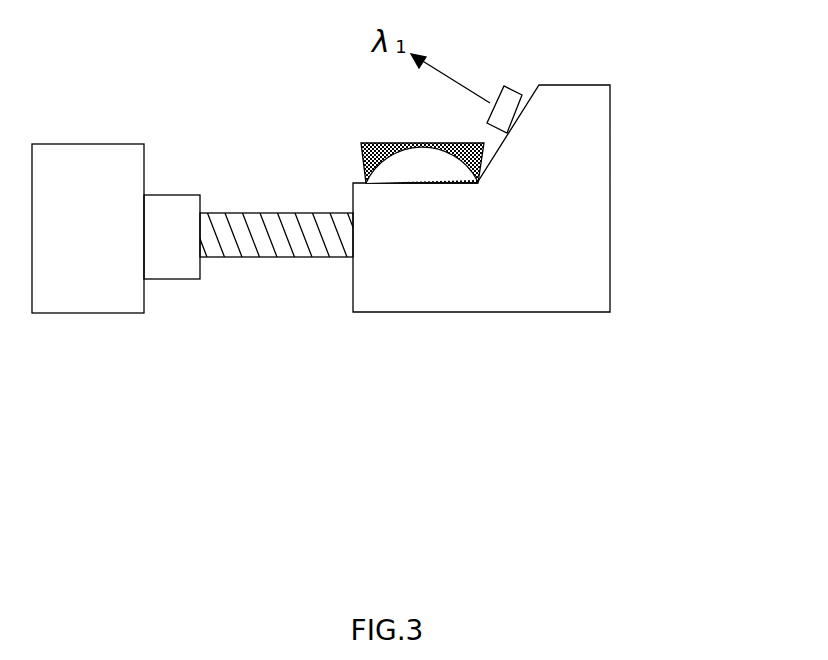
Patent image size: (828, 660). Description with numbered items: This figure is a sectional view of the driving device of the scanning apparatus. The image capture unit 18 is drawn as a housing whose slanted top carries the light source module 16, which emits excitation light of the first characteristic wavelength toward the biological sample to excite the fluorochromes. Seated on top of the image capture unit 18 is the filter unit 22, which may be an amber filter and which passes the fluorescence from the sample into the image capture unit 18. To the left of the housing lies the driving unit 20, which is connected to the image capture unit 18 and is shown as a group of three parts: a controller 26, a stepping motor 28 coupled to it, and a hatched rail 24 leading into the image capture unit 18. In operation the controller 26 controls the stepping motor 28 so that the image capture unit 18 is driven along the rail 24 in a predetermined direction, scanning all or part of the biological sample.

The light source module 16 is at (512, 110).
The image capture unit 18 is at (427, 170).
The driving unit 20 is at (198, 314).
The filter unit 22 is at (383, 153).
The rail 24 is at (277, 293).
The controller 26 is at (92, 313).
The stepping motor 28 is at (173, 279).